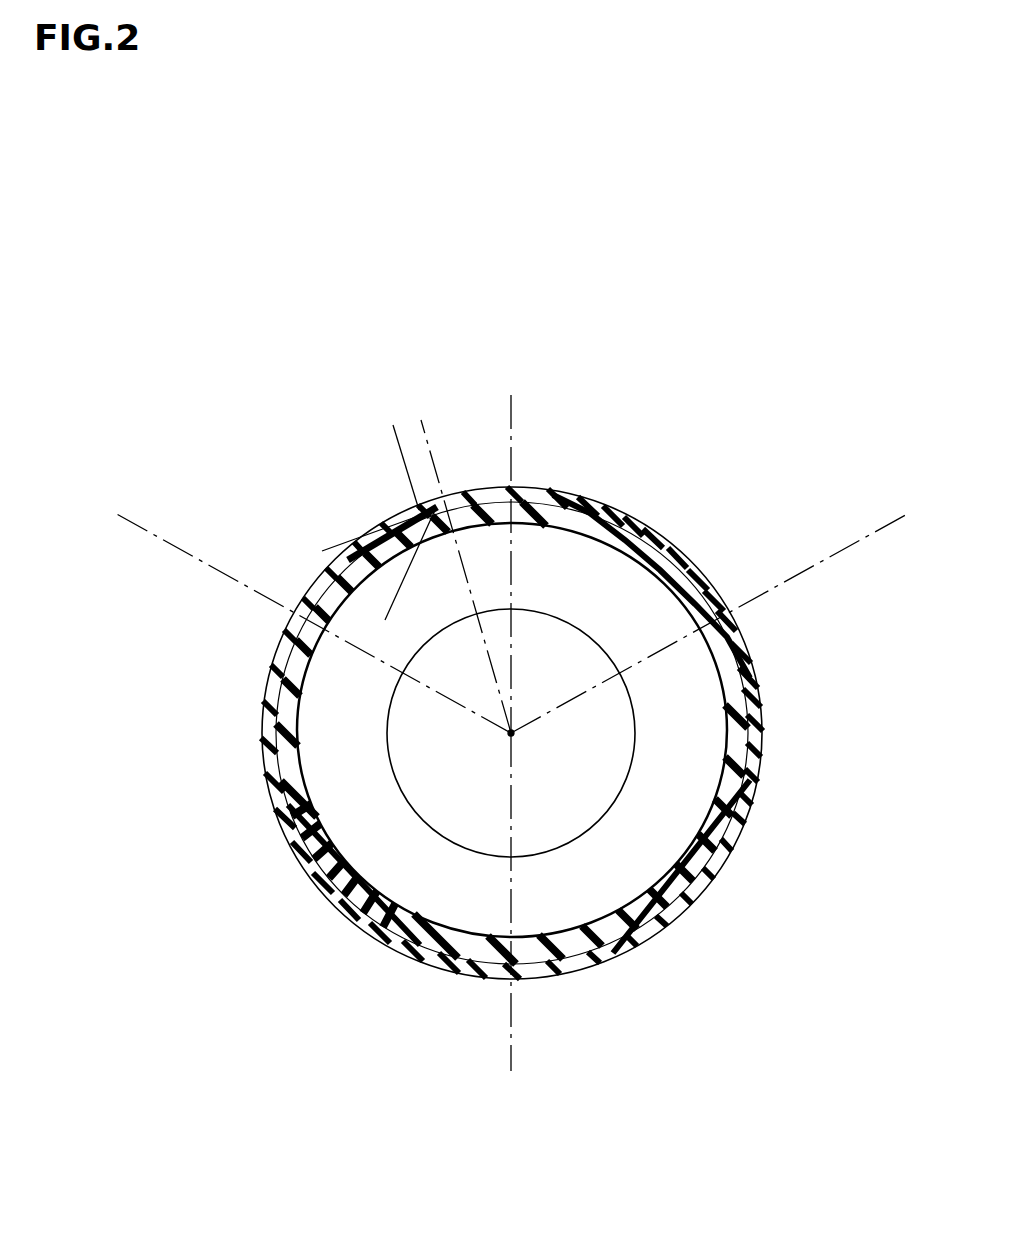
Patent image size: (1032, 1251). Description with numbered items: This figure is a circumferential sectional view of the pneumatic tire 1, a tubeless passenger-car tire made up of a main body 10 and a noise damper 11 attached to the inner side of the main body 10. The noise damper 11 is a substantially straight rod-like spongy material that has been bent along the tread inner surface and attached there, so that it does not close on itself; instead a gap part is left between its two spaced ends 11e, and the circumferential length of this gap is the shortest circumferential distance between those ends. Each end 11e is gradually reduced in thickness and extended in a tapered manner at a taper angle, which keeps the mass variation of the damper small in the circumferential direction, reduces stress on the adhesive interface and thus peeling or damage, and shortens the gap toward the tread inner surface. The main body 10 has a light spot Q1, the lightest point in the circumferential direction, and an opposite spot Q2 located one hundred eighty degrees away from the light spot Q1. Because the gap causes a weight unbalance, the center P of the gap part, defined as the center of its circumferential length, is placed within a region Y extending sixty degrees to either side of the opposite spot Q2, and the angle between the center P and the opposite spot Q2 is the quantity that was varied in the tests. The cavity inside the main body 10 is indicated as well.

The pneumatic tire 1 is at (785, 1097).
The main body 10 is at (687, 908).
The noise damper 11 is at (732, 845).
The end of the noise damper 11e is at (428, 513).
The inner cavity / rim i is at (629, 866).
The region Y is at (903, 512).
The center of the gap part P is at (440, 497).
The light spot Q1 is at (516, 989).
The opposite spot Q2 is at (520, 478).